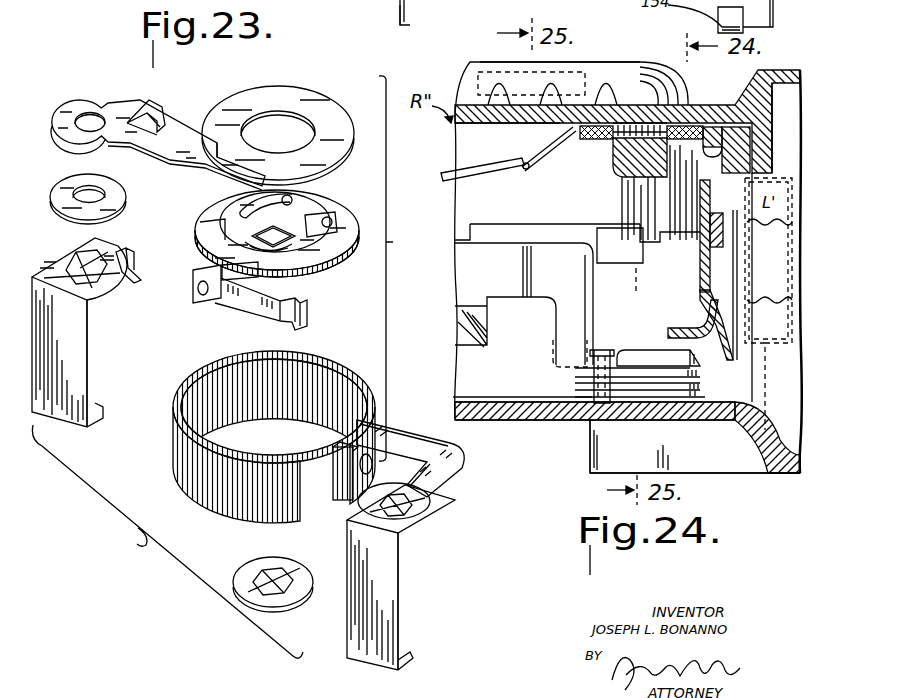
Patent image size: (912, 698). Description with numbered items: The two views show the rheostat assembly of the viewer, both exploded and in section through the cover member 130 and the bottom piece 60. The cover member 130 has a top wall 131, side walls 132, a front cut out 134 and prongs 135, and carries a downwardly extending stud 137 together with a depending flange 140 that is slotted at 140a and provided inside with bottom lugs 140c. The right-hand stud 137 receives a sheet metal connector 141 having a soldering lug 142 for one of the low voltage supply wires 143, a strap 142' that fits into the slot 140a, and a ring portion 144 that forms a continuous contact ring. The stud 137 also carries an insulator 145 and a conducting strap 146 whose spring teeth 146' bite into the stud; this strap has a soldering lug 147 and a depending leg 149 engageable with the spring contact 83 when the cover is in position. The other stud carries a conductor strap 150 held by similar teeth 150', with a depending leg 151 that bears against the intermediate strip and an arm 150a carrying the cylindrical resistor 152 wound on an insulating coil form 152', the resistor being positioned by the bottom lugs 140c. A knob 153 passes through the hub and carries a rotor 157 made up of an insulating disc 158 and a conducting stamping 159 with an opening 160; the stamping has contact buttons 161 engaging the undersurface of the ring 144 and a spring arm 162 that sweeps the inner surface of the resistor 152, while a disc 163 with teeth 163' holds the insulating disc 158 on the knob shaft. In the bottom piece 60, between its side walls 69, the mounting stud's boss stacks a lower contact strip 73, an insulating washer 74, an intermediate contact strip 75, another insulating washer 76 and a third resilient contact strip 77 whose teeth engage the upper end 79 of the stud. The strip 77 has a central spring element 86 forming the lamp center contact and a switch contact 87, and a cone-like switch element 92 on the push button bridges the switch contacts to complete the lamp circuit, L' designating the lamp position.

In FIG. 23, the sheet metal connector 141 is at (79, 99).
In FIG. 24, the sheet metal connector 141 is at (672, 120).
In FIG. 23, the soldering lug 142 is at (162, 106).
In FIG. 24, the soldering lug 142 is at (538, 178).
In FIG. 23, the strap 142' is at (192, 129).
In FIG. 23, the ring portion 144 is at (333, 115).
In FIG. 23, the insulator 145 is at (122, 203).
In FIG. 24, the insulator 145 is at (575, 128).
In FIG. 23, the conducting strap 146 is at (84, 332).
In FIG. 24, the conducting strap 146 is at (607, 146).
In FIG. 23, the spring teeth 146' is at (70, 258).
In FIG. 24, the spring teeth 146' is at (676, 186).
In FIG. 23, the soldering lug 147 is at (136, 270).
In FIG. 23, the depending leg 149 is at (88, 395).
In FIG. 24, the depending leg 149 is at (705, 206).
In FIG. 23, the conductor strap 150 is at (410, 577).
In FIG. 23, the teeth 150' is at (424, 501).
In FIG. 23, the arm 150a is at (398, 428).
In FIG. 23, the depending leg 151 is at (400, 614).
In FIG. 23, the cylindrical resistor 152 is at (274, 425).
In FIG. 23, the insulating coil form 152' is at (315, 462).
In FIG. 23, the rotor 157 is at (358, 229).
In FIG. 23, the insulating disc 158 is at (355, 260).
In FIG. 23, the conducting stamping 159 is at (310, 212).
In FIG. 23, the opening 160 is at (250, 230).
In FIG. 23, the contact buttons 161 is at (282, 200).
In FIG. 23, the spring arm 162 is at (272, 323).
In FIG. 23, the disc 163 is at (275, 598).
In FIG. 23, the teeth 163' is at (288, 564).
In FIG. 24, the prongs 135 is at (408, 28).
In FIG. 24, the cover member 130 is at (784, 67).
In FIG. 24, the knob 153 is at (590, 68).
In FIG. 24, the front cut out 134 is at (796, 118).
In FIG. 24, the top wall 131 is at (503, 124).
In FIG. 24, the stud 137 is at (622, 176).
In FIG. 24, the low voltage supply wire 143 is at (447, 185).
In FIG. 24, the depending flange 140 is at (565, 212).
In FIG. 24, the slot 140a is at (645, 210).
In FIG. 24, the bottom lugs 140c is at (463, 234).
In FIG. 24, the side walls 132 is at (626, 252).
In FIG. 24, the side walls 69 is at (622, 283).
In FIG. 24, the switch contact 87 is at (515, 275).
In FIG. 24, the switch element 92 is at (462, 322).
In FIG. 24, the battery contact 83 is at (703, 293).
In FIG. 24, the spring element 86 is at (717, 331).
In FIG. 24, the upper end of mounting stud 79 is at (640, 350).
In FIG. 24, the third contact resilient strip 77 is at (627, 350).
In FIG. 24, the insulating washer 76 is at (580, 375).
In FIG. 24, the intermediate contact strip 75 is at (580, 386).
In FIG. 24, the bottom piece 60 is at (567, 424).
In FIG. 24, the insulating washer 74 is at (640, 392).
In FIG. 24, the lower contact strip 73 is at (664, 397).
In FIG. 24, the lamp L' is at (768, 304).